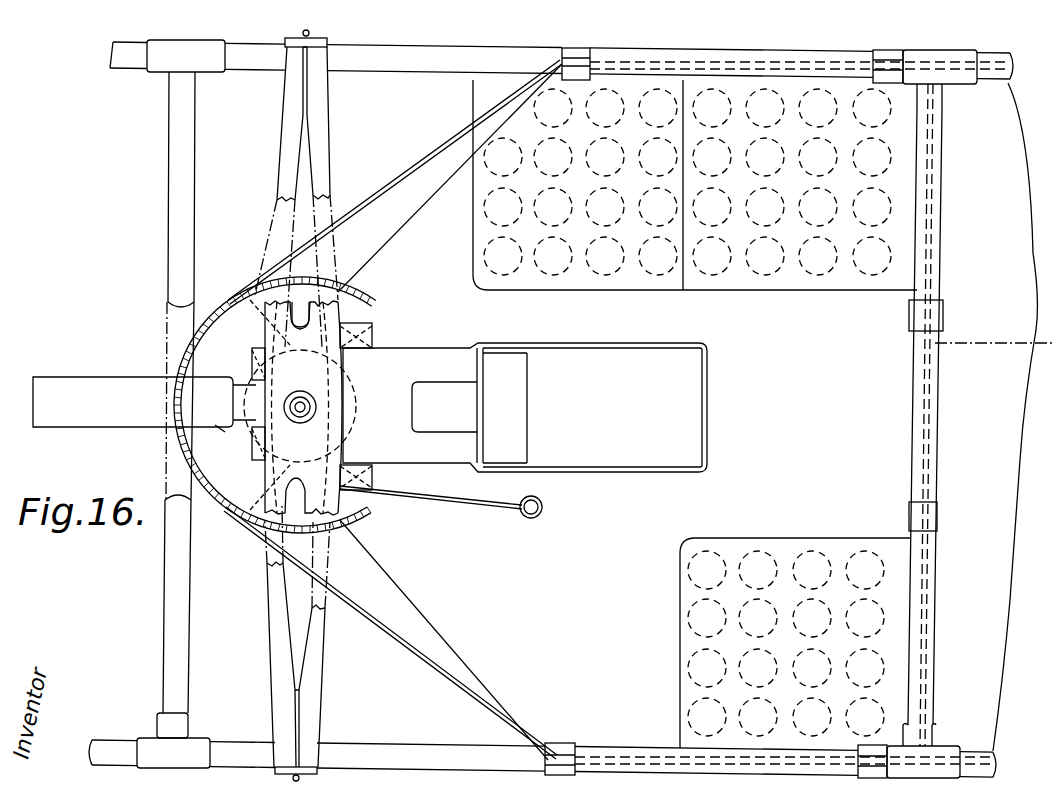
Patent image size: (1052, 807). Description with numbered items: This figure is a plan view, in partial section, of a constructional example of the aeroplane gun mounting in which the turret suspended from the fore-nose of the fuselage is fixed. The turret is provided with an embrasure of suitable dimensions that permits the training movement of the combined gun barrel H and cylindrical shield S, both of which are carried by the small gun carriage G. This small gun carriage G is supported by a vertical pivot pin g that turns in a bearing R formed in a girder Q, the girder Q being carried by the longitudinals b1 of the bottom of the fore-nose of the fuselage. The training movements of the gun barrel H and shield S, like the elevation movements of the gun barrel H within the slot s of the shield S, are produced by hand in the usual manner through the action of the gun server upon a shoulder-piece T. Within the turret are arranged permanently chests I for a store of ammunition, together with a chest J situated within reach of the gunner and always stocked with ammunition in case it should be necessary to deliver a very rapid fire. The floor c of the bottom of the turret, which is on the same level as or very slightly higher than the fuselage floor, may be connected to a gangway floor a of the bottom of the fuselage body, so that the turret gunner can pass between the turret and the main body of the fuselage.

The longitudinals b1 is at (382, 753).
The girder Q is at (320, 160).
The floor of the turret c is at (423, 167).
The chests I is at (795, 283).
The chest J is at (785, 550).
The gun barrel H is at (72, 388).
The cylindrical shield S is at (217, 315).
The slot s is at (220, 432).
The small gun carriage G is at (302, 320).
The vertical pivot pin g is at (313, 407).
The bearing R is at (318, 435).
The shoulder-piece T is at (495, 503).
The gangway floor a is at (1003, 521).